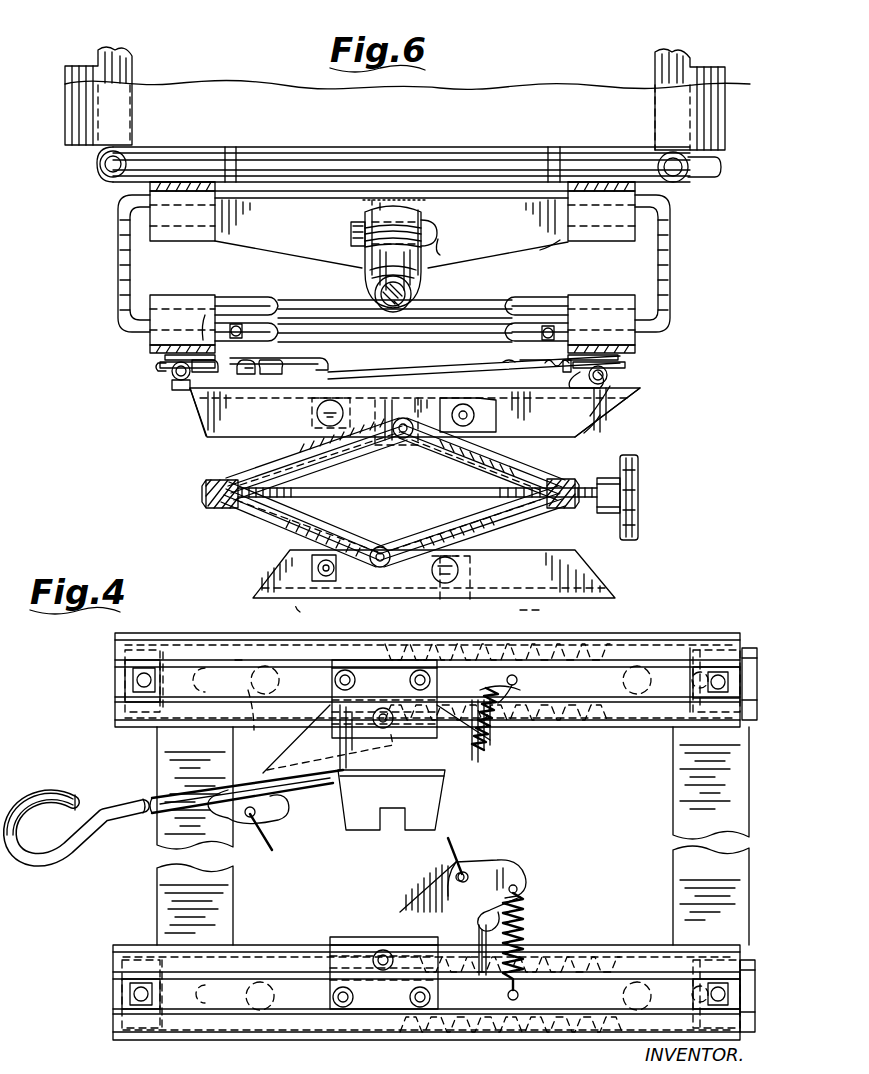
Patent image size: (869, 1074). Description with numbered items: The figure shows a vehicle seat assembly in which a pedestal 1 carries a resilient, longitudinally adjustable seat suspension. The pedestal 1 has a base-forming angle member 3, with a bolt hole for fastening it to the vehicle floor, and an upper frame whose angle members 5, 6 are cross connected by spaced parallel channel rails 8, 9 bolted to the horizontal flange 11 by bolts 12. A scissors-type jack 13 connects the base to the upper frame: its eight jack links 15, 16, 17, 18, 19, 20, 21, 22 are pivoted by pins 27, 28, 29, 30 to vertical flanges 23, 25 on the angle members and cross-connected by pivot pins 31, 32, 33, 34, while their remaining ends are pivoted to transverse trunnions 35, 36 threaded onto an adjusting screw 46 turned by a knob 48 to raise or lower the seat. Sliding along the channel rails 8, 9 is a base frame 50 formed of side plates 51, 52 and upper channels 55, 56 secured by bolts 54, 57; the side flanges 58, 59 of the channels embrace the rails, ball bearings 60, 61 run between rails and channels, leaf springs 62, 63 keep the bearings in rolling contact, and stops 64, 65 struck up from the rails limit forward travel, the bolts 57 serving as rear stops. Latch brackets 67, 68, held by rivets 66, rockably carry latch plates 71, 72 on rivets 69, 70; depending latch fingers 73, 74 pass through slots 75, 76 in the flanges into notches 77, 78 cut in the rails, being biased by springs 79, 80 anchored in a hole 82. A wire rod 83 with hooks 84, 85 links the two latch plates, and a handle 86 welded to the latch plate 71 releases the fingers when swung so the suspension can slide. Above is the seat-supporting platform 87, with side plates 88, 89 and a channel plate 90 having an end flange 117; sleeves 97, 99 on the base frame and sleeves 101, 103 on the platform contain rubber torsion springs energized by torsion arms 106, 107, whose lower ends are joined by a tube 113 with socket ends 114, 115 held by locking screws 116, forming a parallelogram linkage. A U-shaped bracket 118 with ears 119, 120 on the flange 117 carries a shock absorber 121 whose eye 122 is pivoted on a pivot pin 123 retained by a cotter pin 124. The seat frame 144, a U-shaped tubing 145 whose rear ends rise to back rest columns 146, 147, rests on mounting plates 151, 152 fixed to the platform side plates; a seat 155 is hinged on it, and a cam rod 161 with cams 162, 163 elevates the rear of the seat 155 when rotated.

In FIG. 6, the pedestal 1 is at (654, 538).
In FIG. 6, the base-forming angle member 3 is at (613, 594).
In FIG. 4, the angle member 5 is at (152, 904).
In FIG. 6, the angle member 6 is at (192, 429).
In FIG. 4, the angle member 6 is at (768, 892).
In FIG. 6, the channel rail 8 is at (174, 377).
In FIG. 4, the channel rail 8 is at (754, 958).
In FIG. 6, the channel rail 9 is at (614, 390).
In FIG. 4, the channel rail 9 is at (754, 646).
In FIG. 6, the horizontal flange 11 is at (525, 414).
In FIG. 4, the bolts 12 is at (160, 655).
In FIG. 6, the scissors-type jack 13 is at (204, 524).
In FIG. 6, the jack link 15 is at (508, 532).
In FIG. 6, the jack link 16 is at (430, 522).
In FIG. 6, the jack link 17 is at (432, 468).
In FIG. 6, the jack link 18 is at (502, 461).
In FIG. 6, the jack link 19 is at (290, 538).
In FIG. 6, the jack link 20 is at (254, 538).
In FIG. 6, the jack link 21 is at (360, 466).
In FIG. 6, the jack link 22 is at (272, 458).
In FIG. 6, the vertical flange 23 is at (594, 572).
In FIG. 6, the vertical flange 25 is at (596, 424).
In FIG. 6, the pin 27 is at (328, 575).
In FIG. 6, the pin 28 is at (318, 414).
In FIG. 6, the pin 29 is at (448, 580).
In FIG. 6, the pin 30 is at (474, 414).
In FIG. 6, the pivot pin 31 is at (440, 590).
In FIG. 6, the pivot pin 32 is at (382, 567).
In FIG. 6, the pivot pin 33 is at (408, 428).
In FIG. 6, the pivot pin 34 is at (394, 428).
In FIG. 6, the trunnion 35 is at (202, 488).
In FIG. 6, the trunnion 36 is at (553, 480).
In FIG. 6, the adjusting screw 46 is at (350, 502).
In FIG. 6, the knob 48 is at (640, 492).
In FIG. 4, the base frame 50 is at (110, 715).
In FIG. 6, the side plate 51 is at (622, 357).
In FIG. 6, the side plate 52 is at (166, 353).
In FIG. 4, the bolts 54 is at (130, 678).
In FIG. 6, the upper channel 55 is at (618, 366).
In FIG. 4, the upper channel 55 is at (531, 1034).
In FIG. 6, the upper channel 56 is at (160, 362).
In FIG. 4, the upper channel 56 is at (687, 648).
In FIG. 4, the bolts 57 is at (720, 672).
In FIG. 6, the side flange 58 is at (218, 392).
In FIG. 6, the side flange 59 is at (162, 374).
In FIG. 4, the ball bearing 60 is at (256, 665).
In FIG. 6, the ball bearing 61 is at (188, 398).
In FIG. 4, the ball bearing 61 is at (642, 665).
In FIG. 6, the flat leaf spring 62 is at (180, 391).
In FIG. 4, the flat leaf spring 62 is at (249, 710).
In FIG. 6, the flat leaf spring 63 is at (608, 410).
In FIG. 4, the flat leaf spring 63 is at (236, 988).
In FIG. 4, the stop 64 is at (208, 668).
In FIG. 4, the stop 65 is at (192, 984).
In FIG. 4, the rivets 66 is at (418, 686).
In FIG. 6, the latch bracket 67 is at (201, 317).
In FIG. 4, the latch bracket 67 is at (442, 746).
In FIG. 4, the latch bracket 68 is at (430, 939).
In FIG. 4, the rivet 69 is at (386, 730).
In FIG. 4, the rivet 70 is at (382, 952).
In FIG. 6, the latch plate 71 is at (244, 378).
In FIG. 4, the latch plate 71 is at (444, 802).
In FIG. 6, the latch plate 72 is at (562, 370).
In FIG. 4, the latch plate 72 is at (496, 870).
In FIG. 4, the latch finger 73 is at (486, 754).
In FIG. 4, the latch finger 74 is at (491, 910).
In FIG. 4, the slot 75 is at (486, 696).
In FIG. 4, the slot 76 is at (480, 975).
In FIG. 4, the notches 77 is at (548, 642).
In FIG. 4, the notches 78 is at (602, 954).
In FIG. 6, the spring 79 is at (546, 366).
In FIG. 4, the spring 79 is at (525, 930).
In FIG. 4, the spring 80 is at (514, 740).
In FIG. 4, the hole 82 is at (517, 680).
In FIG. 6, the rod 83 is at (340, 373).
In FIG. 4, the rod 83 is at (278, 844).
In FIG. 6, the hook 84 is at (284, 358).
In FIG. 6, the hook 85 is at (512, 362).
In FIG. 6, the handle 86 is at (266, 369).
In FIG. 4, the handle 86 is at (104, 834).
In FIG. 6, the seat-supporting platform 87 is at (643, 196).
In FIG. 4, the seat-supporting platform 87 is at (460, 880).
In FIG. 6, the side plate 88 is at (573, 204).
In FIG. 6, the side plate 89 is at (120, 189).
In FIG. 6, the formed channel plate 90 is at (494, 258).
In FIG. 6, the sleeve 97 is at (590, 296).
In FIG. 6, the sleeve 99 is at (174, 294).
In FIG. 6, the sleeve 101 is at (562, 238).
In FIG. 6, the sleeve 103 is at (226, 218).
In FIG. 6, the torsion arm 106 is at (670, 286).
In FIG. 6, the torsion arm 107 is at (118, 276).
In FIG. 6, the tube 113 is at (449, 302).
In FIG. 6, the socket-forming end 114 is at (244, 296).
In FIG. 6, the socket-forming end 115 is at (534, 302).
In FIG. 6, the locking screws 116 is at (246, 336).
In FIG. 6, the end flange 117 is at (276, 258).
In FIG. 6, the U-shaped bracket 118 is at (408, 193).
In FIG. 6, the ear 119 is at (350, 214).
In FIG. 6, the ear 120 is at (428, 208).
In FIG. 6, the shock absorber 121 is at (372, 272).
In FIG. 6, the eye 122 is at (375, 198).
In FIG. 6, the pivot pin 123 is at (432, 232).
In FIG. 6, the cotter pin 124 is at (352, 228).
In FIG. 6, the seat frame 144 is at (688, 176).
In FIG. 6, the U-shaped tubing 145 is at (100, 168).
In FIG. 6, the back rest column 146 is at (693, 65).
In FIG. 6, the back rest column 147 is at (102, 56).
In FIG. 6, the mounting plate 151 is at (184, 182).
In FIG. 6, the mounting plate 152 is at (600, 182).
In FIG. 6, the seat 155 is at (216, 84).
In FIG. 6, the cam rod 161 is at (491, 148).
In FIG. 6, the cam 162 is at (232, 147).
In FIG. 6, the cam 163 is at (555, 148).